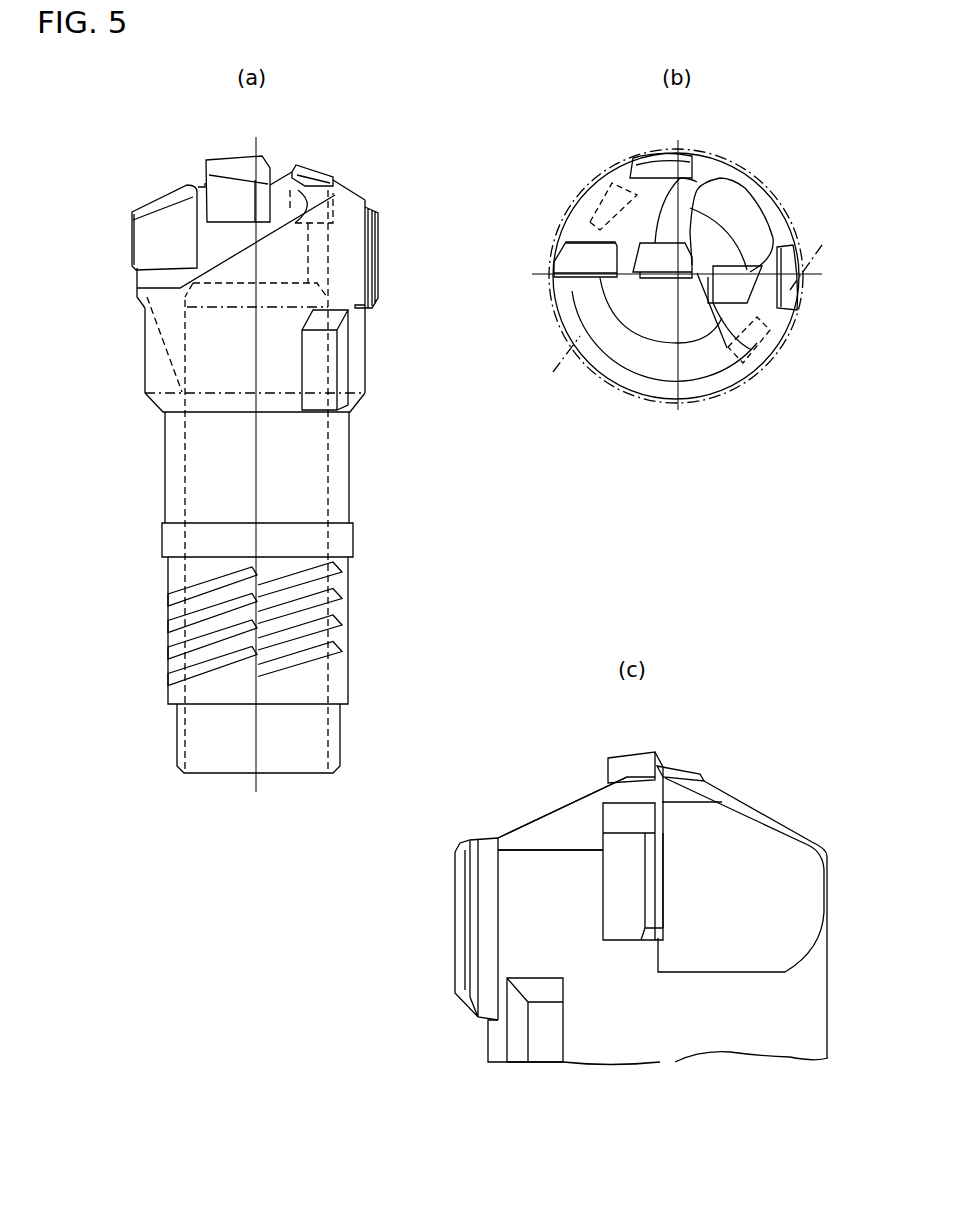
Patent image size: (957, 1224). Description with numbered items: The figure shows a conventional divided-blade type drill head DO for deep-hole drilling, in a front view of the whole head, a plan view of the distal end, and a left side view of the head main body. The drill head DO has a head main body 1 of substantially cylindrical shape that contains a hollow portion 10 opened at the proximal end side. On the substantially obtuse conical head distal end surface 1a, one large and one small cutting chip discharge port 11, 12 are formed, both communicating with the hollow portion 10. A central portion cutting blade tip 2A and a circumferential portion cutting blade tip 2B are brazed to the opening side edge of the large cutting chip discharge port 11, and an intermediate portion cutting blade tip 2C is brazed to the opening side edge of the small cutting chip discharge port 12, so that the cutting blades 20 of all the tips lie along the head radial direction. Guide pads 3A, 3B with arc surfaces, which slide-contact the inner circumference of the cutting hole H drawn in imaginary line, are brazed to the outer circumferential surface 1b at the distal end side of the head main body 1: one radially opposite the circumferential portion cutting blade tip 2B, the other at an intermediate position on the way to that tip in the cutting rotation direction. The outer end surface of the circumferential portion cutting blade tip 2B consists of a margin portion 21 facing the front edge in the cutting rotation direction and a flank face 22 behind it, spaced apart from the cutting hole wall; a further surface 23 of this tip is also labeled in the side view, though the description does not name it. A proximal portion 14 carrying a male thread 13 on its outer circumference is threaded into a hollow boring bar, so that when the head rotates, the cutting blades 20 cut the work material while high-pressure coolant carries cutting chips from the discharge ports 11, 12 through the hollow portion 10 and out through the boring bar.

The head main body 1 is at (145, 345).
The head distal end surface 1a is at (615, 212).
The outer circumferential surface 1b is at (340, 258).
The central portion cutting blade tip 2A is at (235, 158).
The circumferential portion cutting blade tip 2B is at (158, 192).
The intermediate portion cutting blade tip 2C is at (308, 163).
The guide pad 3A is at (380, 283).
The guide pad 3B is at (650, 158).
The hollow portion 10 is at (187, 728).
The large cutting chip discharge port 11 is at (228, 252).
The small cutting chip discharge port 12 is at (735, 215).
The male thread 13 is at (350, 613).
The proximal portion 14 is at (170, 630).
The cutting blade 20 is at (140, 205).
The margin portion 21 is at (175, 183).
The flank face 22 is at (563, 252).
The side face 23 is at (670, 278).
The drill head DO is at (362, 527).
The cutting hole H is at (570, 343).